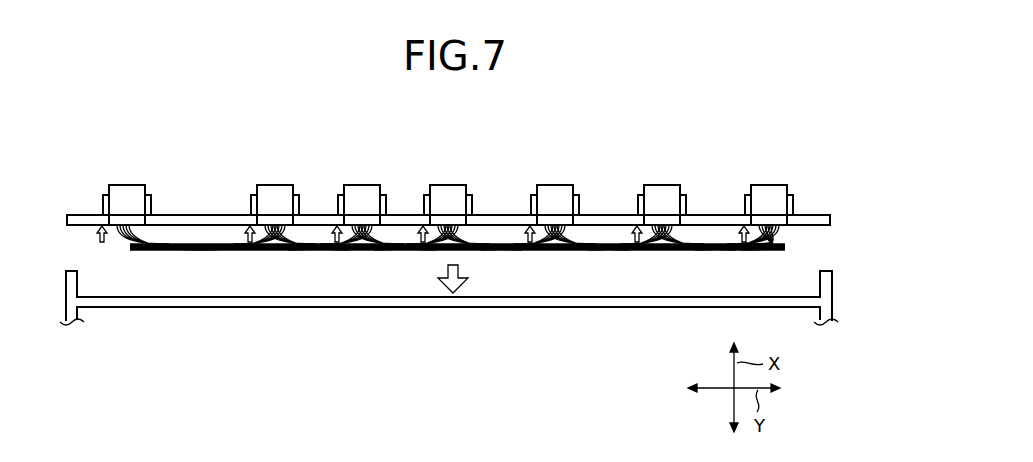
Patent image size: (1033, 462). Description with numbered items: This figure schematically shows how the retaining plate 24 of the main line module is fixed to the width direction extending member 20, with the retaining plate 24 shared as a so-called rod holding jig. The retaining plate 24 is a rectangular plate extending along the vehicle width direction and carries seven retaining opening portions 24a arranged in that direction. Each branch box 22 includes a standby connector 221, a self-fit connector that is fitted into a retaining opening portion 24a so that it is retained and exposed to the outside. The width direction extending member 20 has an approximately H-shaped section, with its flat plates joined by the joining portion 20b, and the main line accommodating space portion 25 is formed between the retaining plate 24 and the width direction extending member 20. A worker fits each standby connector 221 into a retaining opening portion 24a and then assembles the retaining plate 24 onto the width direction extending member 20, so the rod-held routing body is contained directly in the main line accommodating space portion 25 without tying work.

The standby connector 221 is at (123, 195).
The branch box 22 is at (446, 196).
The retaining opening portion 24a is at (157, 203).
The retaining plate 24 is at (822, 215).
The main line accommodating space portion 25 is at (98, 279).
The width direction extending member 20 is at (834, 279).
The joining portion 20b is at (300, 307).